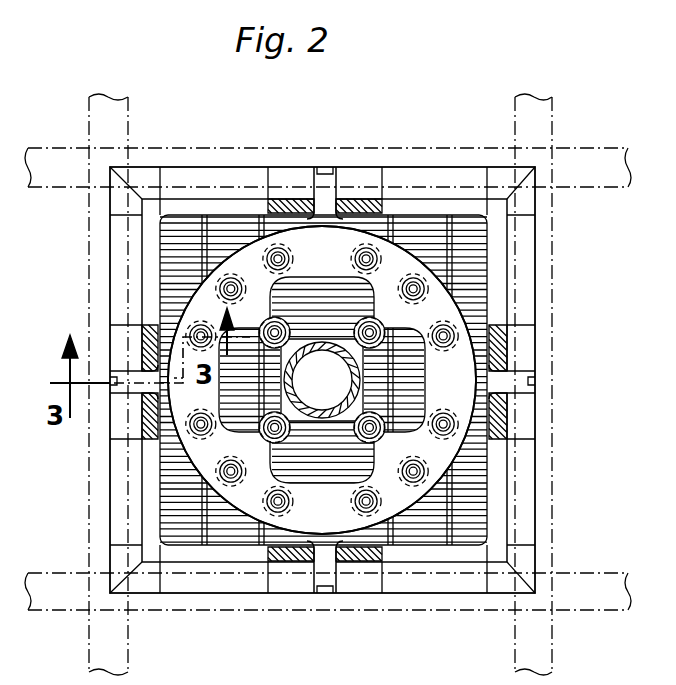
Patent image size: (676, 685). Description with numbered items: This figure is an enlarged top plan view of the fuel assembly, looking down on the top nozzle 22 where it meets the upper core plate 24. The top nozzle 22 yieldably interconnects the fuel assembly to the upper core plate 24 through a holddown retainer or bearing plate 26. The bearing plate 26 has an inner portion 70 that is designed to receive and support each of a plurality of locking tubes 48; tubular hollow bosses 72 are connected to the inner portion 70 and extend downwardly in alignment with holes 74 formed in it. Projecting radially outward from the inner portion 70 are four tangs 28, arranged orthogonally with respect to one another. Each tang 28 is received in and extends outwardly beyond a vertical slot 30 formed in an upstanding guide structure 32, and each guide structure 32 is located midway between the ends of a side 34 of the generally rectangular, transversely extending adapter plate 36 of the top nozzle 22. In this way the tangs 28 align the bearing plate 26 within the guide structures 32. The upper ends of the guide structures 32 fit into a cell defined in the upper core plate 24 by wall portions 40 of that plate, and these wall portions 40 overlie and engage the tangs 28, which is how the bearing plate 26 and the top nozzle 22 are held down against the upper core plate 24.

The top nozzle 22 is at (536, 229).
The upper core plate 24 is at (553, 641).
The bearing plate 26 is at (470, 451).
The tang 28 is at (326, 170).
The vertical slot 30 is at (312, 193).
The guide structure 32 is at (356, 200).
The side of the adapter plate 34 is at (418, 167).
The adapter plate 36 is at (490, 503).
The wall portion 40 is at (176, 147).
The locking tube 48 is at (235, 283).
The inner portion 70 is at (210, 293).
The tubular hollow boss 72 is at (380, 323).
The hole 74 is at (355, 260).